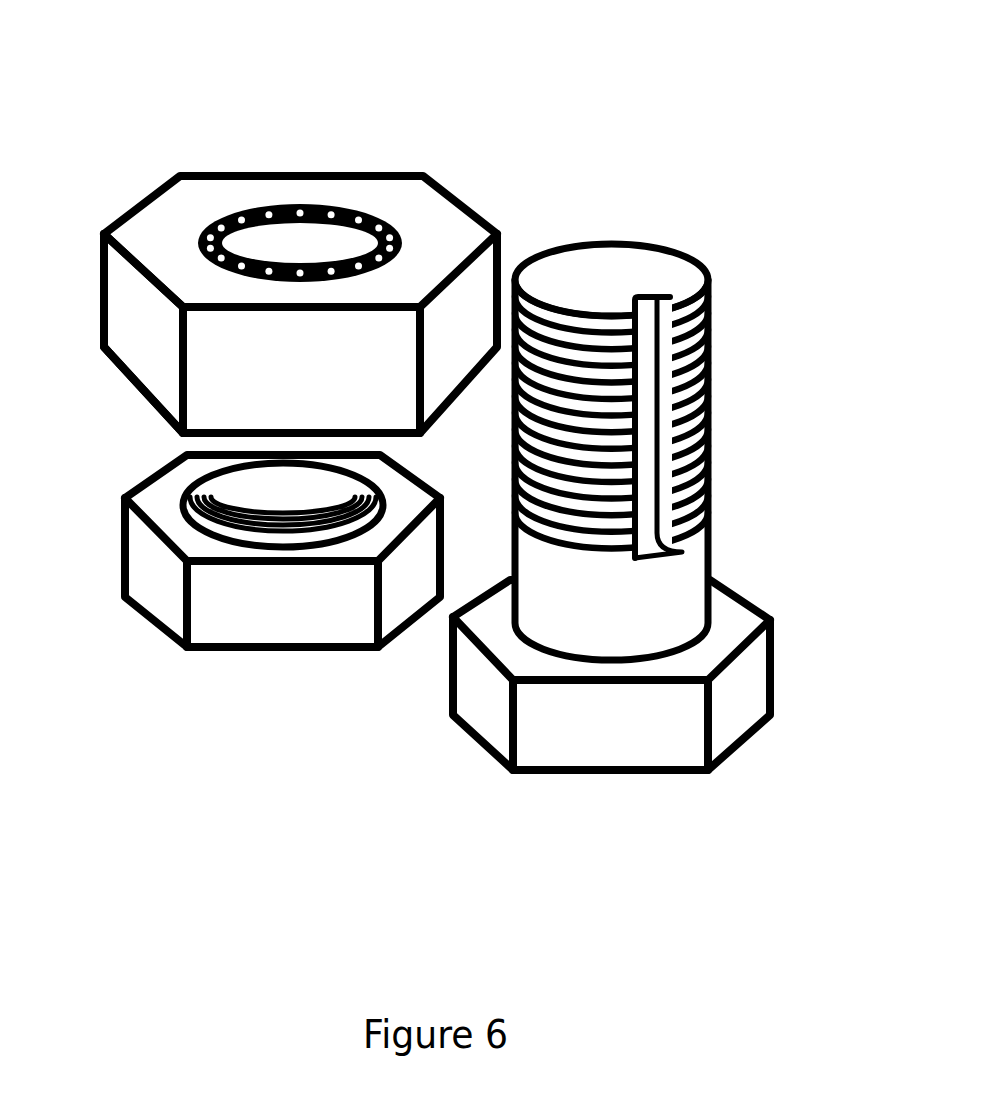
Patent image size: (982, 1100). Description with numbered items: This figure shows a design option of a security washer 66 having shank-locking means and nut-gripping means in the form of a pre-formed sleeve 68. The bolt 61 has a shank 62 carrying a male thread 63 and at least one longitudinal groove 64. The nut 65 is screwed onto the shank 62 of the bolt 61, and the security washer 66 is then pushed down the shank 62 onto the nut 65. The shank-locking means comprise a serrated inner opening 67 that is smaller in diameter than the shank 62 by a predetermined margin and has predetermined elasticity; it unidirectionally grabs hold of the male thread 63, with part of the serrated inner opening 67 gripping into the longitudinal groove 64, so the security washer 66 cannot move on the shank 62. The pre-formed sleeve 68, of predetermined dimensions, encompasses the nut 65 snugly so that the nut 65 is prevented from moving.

The bolt 61 is at (483, 680).
The shank 62 is at (690, 563).
The male thread 63 is at (708, 363).
The longitudinal groove 64 is at (647, 423).
The nut 65 is at (165, 590).
The security washer 66 is at (170, 225).
The serrated inner opening 67 is at (320, 248).
The pre-formed sleeve 68 is at (160, 373).